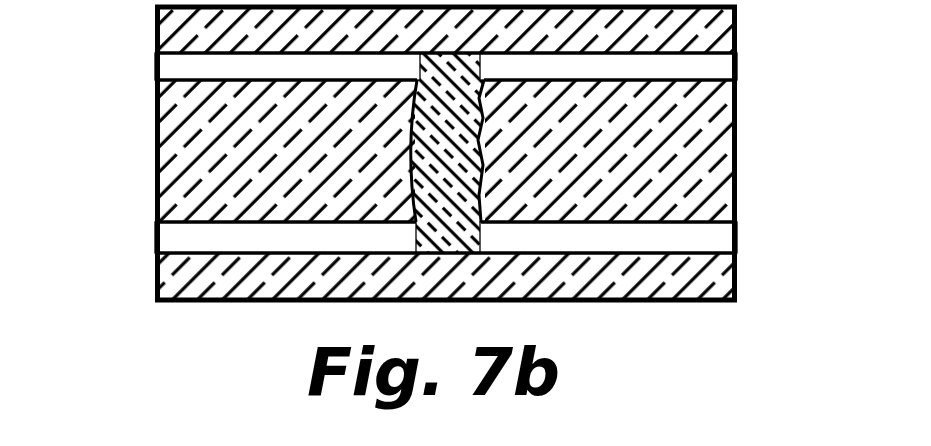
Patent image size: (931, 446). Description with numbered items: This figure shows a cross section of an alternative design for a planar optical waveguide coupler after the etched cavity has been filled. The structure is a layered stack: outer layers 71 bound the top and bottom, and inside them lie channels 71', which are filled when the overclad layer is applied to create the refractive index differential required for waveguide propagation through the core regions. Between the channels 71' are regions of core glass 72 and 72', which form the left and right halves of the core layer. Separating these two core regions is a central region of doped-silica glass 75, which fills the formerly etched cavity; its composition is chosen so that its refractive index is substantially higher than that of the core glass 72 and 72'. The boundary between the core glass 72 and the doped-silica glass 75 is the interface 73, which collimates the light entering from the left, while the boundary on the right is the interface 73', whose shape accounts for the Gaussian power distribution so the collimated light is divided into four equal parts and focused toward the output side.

The outer layer 71 is at (488, 153).
The channels 71' is at (492, 149).
The core glass region 72 is at (247, 151).
The core glass region 72' is at (649, 151).
The interface 73 is at (368, 151).
The interface 73' is at (534, 151).
The doped-silica glass 75 is at (458, 171).